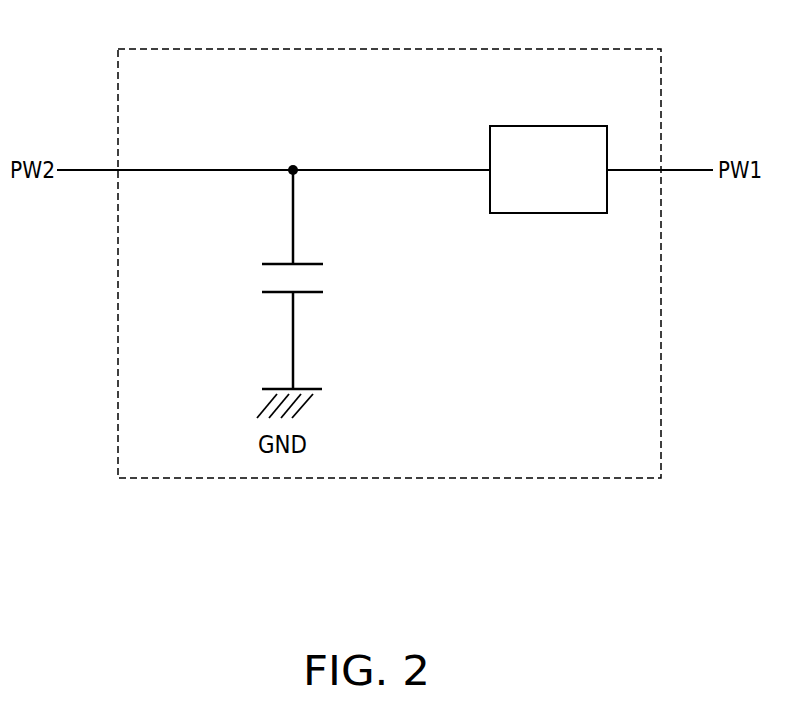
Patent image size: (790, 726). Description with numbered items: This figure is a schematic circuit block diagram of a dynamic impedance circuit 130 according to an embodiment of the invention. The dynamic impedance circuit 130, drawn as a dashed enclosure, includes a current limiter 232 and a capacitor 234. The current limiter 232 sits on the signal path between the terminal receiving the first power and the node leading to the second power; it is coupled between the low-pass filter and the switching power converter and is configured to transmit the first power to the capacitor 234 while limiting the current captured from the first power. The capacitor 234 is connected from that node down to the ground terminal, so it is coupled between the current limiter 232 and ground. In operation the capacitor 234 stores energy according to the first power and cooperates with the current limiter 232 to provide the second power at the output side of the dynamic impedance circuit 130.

The dynamic impedance circuit 130 is at (523, 528).
The current limiter 232 is at (547, 214).
The capacitor 234 is at (327, 280).